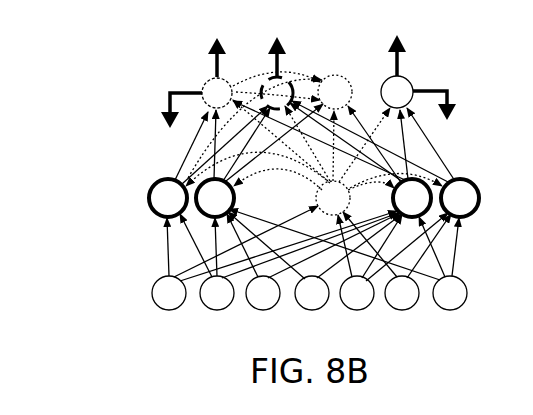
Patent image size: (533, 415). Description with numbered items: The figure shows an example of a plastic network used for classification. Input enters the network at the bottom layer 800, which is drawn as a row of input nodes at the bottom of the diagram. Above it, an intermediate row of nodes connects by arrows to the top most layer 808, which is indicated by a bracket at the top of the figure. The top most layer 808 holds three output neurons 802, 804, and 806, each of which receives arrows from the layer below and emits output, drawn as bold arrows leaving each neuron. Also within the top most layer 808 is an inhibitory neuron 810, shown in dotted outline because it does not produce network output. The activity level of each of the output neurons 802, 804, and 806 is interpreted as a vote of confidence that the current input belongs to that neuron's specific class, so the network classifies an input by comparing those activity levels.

The bottom layer 800 is at (123, 280).
The output neuron 802 is at (214, 91).
The output neuron 804 is at (273, 77).
The output neuron 806 is at (398, 93).
The top most layer 808 is at (146, 78).
The inhibitory neuron 810 is at (332, 92).